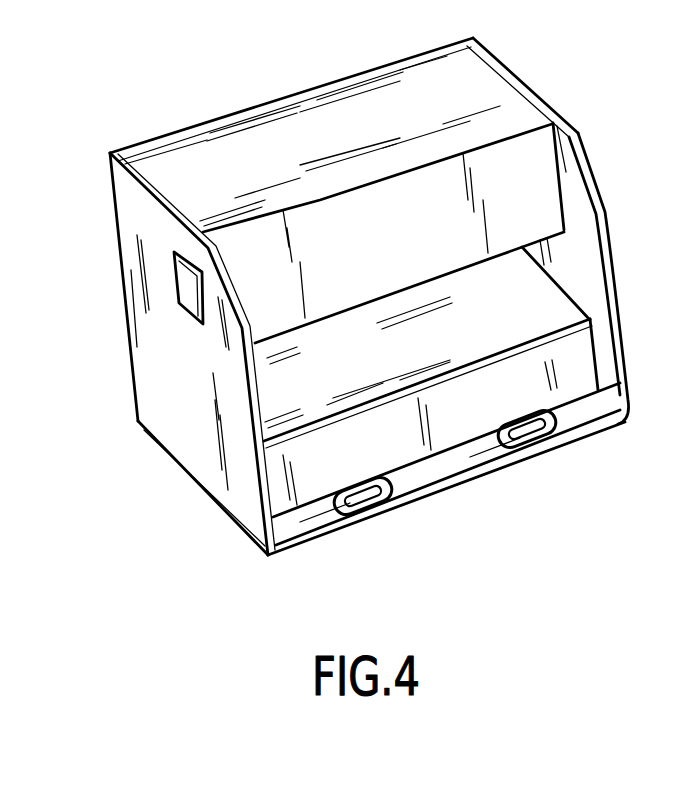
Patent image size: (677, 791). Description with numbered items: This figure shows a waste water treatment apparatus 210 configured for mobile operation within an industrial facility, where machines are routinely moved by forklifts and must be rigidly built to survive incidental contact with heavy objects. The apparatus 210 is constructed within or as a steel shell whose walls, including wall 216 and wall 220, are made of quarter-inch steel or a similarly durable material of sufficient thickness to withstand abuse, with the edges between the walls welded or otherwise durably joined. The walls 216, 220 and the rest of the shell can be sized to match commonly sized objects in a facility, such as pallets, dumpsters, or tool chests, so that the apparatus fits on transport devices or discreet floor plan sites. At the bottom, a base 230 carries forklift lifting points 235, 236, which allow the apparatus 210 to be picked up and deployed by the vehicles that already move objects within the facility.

The apparatus 210 is at (166, 68).
The wall 216 is at (592, 165).
The wall 220 is at (156, 345).
The base 230 is at (447, 493).
The forklift lifting point 235 is at (367, 507).
The forklift lifting point 236 is at (542, 440).